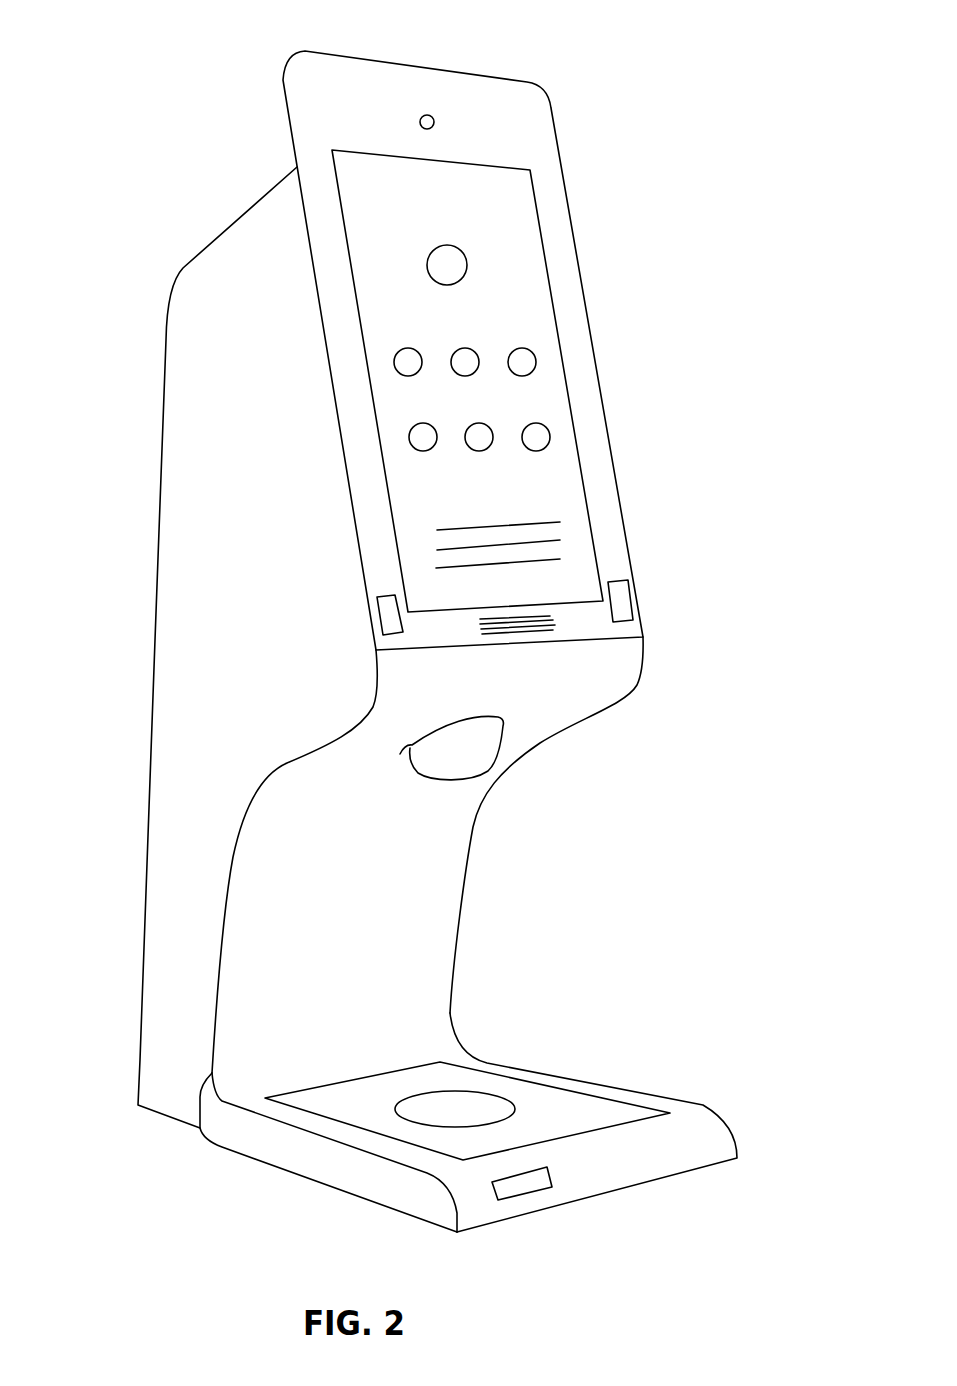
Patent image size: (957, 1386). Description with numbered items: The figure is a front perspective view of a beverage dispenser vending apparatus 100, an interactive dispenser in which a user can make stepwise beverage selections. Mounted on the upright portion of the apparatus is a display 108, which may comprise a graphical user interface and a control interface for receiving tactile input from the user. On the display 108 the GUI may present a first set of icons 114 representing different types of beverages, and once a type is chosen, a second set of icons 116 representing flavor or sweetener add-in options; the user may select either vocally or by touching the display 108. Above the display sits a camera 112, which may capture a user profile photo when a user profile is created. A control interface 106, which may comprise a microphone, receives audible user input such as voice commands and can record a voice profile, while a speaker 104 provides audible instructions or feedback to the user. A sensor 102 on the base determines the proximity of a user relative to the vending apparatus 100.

The vending apparatus 100 is at (619, 59).
The sensor 102 is at (537, 1182).
The speaker 104 is at (390, 618).
The control interface 106 is at (523, 633).
The display 108 is at (540, 318).
The camera 112 is at (425, 116).
The first set of icons 114 is at (465, 265).
The second set of icons 116 is at (413, 437).